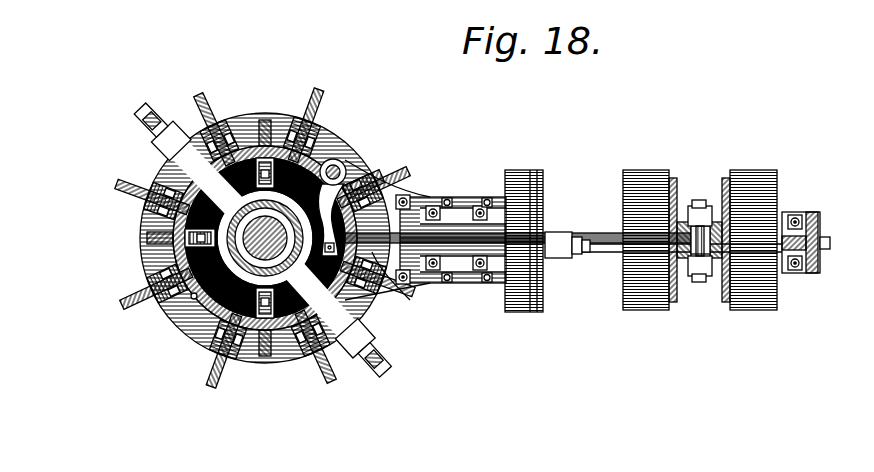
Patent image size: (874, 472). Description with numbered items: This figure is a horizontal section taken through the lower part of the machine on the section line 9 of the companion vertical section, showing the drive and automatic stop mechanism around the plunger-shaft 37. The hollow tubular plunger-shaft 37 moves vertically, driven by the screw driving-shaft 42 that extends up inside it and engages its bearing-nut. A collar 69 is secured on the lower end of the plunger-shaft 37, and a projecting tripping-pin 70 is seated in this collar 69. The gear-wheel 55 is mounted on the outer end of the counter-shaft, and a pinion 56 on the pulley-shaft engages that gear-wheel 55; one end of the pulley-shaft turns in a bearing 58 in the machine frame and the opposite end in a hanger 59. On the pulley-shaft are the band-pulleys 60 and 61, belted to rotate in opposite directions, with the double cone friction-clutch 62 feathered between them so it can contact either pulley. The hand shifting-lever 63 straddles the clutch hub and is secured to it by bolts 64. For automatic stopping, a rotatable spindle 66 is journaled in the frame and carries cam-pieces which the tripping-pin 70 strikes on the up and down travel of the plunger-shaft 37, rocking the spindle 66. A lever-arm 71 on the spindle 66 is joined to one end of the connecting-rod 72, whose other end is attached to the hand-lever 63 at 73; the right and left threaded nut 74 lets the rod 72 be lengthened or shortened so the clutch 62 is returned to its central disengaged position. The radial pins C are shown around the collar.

The section line 9 is at (210, 336).
The plunger-shaft 37 is at (178, 252).
The screw driving-shaft 42 is at (198, 287).
The gear-wheel 55 is at (530, 302).
The pinion 56 is at (534, 234).
The bearing 58 is at (470, 239).
The hanger 59 is at (808, 274).
The band-pulley 60 is at (646, 240).
The band-pulley 61 is at (753, 240).
The double cone friction-clutch 62 is at (724, 186).
The hand shifting-lever 63 is at (712, 248).
The bolts 64 is at (698, 208).
The rotatable spindle 66 is at (342, 172).
The collar 69 is at (165, 224).
The tripping-pin 70 is at (292, 222).
The lever-arm 71 is at (386, 198).
The connecting-rod 72 is at (412, 284).
The attachment point 73 is at (700, 262).
The right and left threaded nut 74 is at (558, 250).
The pin C is at (217, 103).